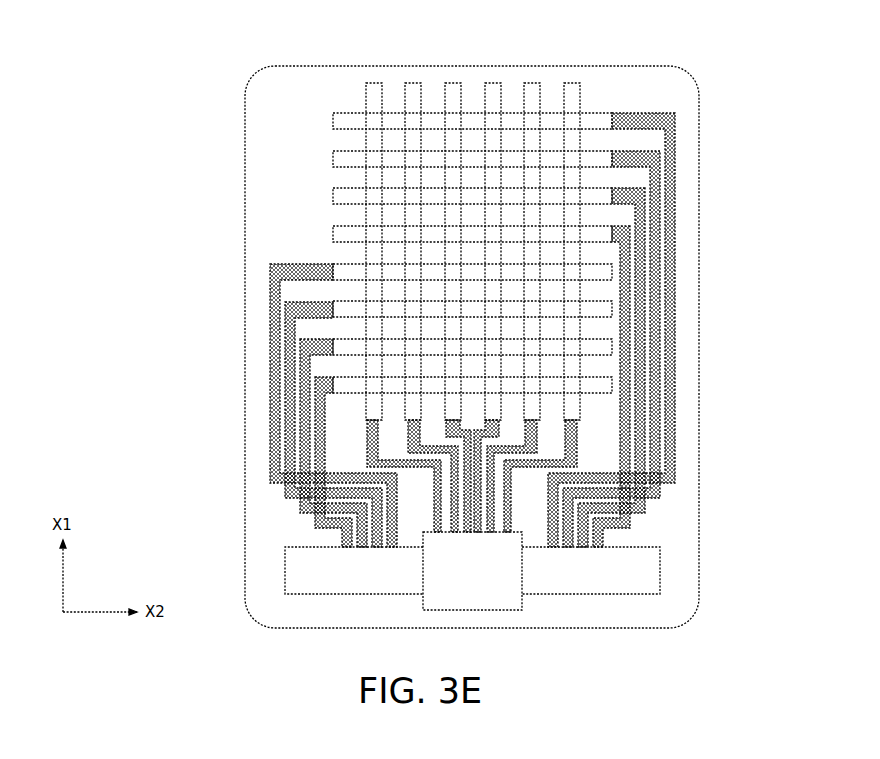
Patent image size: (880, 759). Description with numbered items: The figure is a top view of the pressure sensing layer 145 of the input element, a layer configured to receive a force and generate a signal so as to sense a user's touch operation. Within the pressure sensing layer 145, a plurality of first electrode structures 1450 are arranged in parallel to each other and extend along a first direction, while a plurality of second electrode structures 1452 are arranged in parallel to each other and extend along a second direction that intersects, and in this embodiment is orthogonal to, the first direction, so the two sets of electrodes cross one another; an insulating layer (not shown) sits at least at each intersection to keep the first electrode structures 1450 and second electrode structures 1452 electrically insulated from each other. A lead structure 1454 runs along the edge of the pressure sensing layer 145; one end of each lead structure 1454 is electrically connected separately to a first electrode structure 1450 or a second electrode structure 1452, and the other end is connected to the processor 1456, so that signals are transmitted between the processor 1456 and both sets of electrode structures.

The pressure sensing layer 145 is at (192, 72).
The first electrode structures 1450 is at (592, 122).
The second electrode structures 1452 is at (570, 96).
The lead structure 1454 is at (672, 270).
The processor 1456 is at (625, 568).